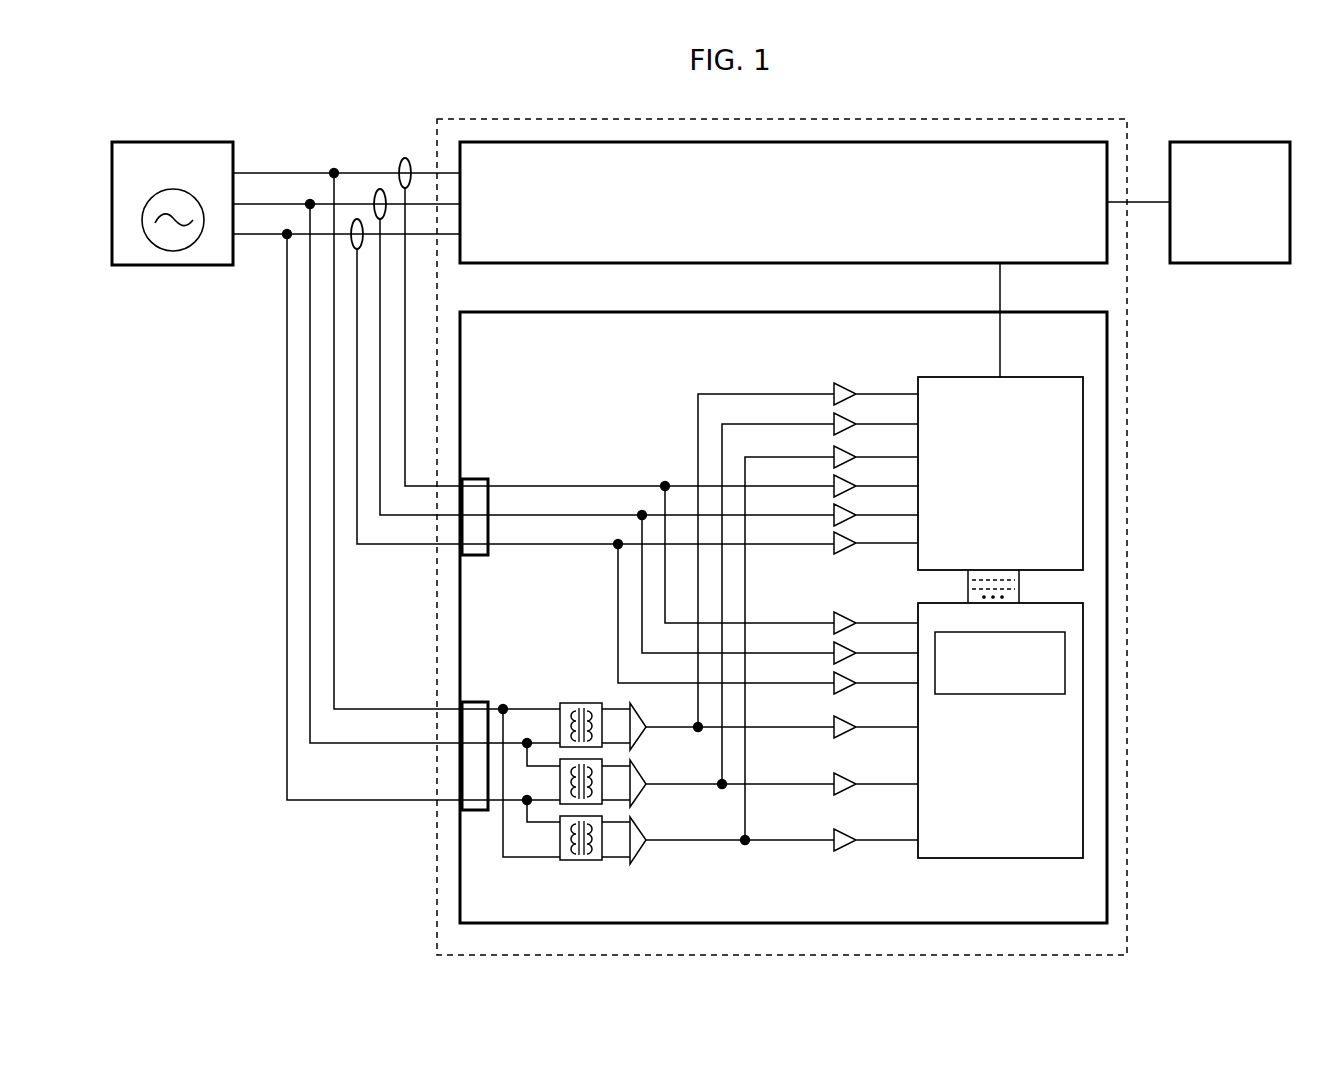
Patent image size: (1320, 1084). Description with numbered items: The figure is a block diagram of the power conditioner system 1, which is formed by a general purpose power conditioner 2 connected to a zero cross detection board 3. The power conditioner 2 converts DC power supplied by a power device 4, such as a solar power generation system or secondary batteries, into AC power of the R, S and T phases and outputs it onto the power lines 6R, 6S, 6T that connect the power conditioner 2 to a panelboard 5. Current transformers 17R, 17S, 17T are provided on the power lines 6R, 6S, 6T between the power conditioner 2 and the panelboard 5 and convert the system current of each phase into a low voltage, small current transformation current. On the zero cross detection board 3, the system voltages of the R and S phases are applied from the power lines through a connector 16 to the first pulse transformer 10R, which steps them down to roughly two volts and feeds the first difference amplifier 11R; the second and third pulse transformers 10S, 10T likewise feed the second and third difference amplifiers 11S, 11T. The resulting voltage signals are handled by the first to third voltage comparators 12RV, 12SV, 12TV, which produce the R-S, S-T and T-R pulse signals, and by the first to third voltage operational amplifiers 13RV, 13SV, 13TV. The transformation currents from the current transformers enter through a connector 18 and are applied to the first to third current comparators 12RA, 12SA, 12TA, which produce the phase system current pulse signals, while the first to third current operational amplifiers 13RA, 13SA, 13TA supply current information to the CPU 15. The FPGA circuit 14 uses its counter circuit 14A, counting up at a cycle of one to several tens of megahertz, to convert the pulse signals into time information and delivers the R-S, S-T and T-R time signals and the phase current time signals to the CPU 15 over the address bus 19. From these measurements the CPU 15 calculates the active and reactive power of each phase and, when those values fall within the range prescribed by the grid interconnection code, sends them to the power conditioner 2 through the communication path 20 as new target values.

The power conditioner system 1 is at (1020, 117).
The power conditioner 2 is at (1055, 142).
The zero cross detection board 3 is at (1060, 312).
The power device 4 is at (1250, 142).
The panelboard 5 is at (190, 142).
The power line 6R is at (306, 173).
The power line 6S is at (306, 204).
The power line 6T is at (306, 234).
The first pulse transformer 10R is at (581, 703).
The second pulse transformer 10S is at (598, 757).
The third pulse transformer 10T is at (581, 860).
The first difference amplifier 11R is at (646, 718).
The second difference amplifier 11S is at (646, 795).
The third difference amplifier 11T is at (646, 852).
The first current comparator 12RA is at (832, 620).
The second current comparator 12SA is at (832, 650).
The third current comparator 12TA is at (832, 680).
The first voltage comparator 12RV is at (832, 724).
The second voltage comparator 12SV is at (832, 780).
The third voltage comparator 12TV is at (832, 836).
The first voltage operational amplifier 13RV is at (832, 390).
The second voltage operational amplifier 13SV is at (832, 420).
The third voltage operational amplifier 13TV is at (832, 452).
The first current operational amplifier 13RA is at (832, 483).
The second current operational amplifier 13SA is at (832, 512).
The third current operational amplifier 13TA is at (832, 540).
The FPGA circuit 14 is at (1022, 858).
The counter circuit 14A is at (1083, 662).
The CPU 15 is at (1028, 377).
The connector 16 is at (488, 702).
The current transformer 17R is at (407, 158).
The current transformer 17S is at (380, 189).
The current transformer 17T is at (357, 219).
The connector 18 is at (488, 479).
The address bus 19 is at (1025, 592).
The communication path 20 is at (998, 290).